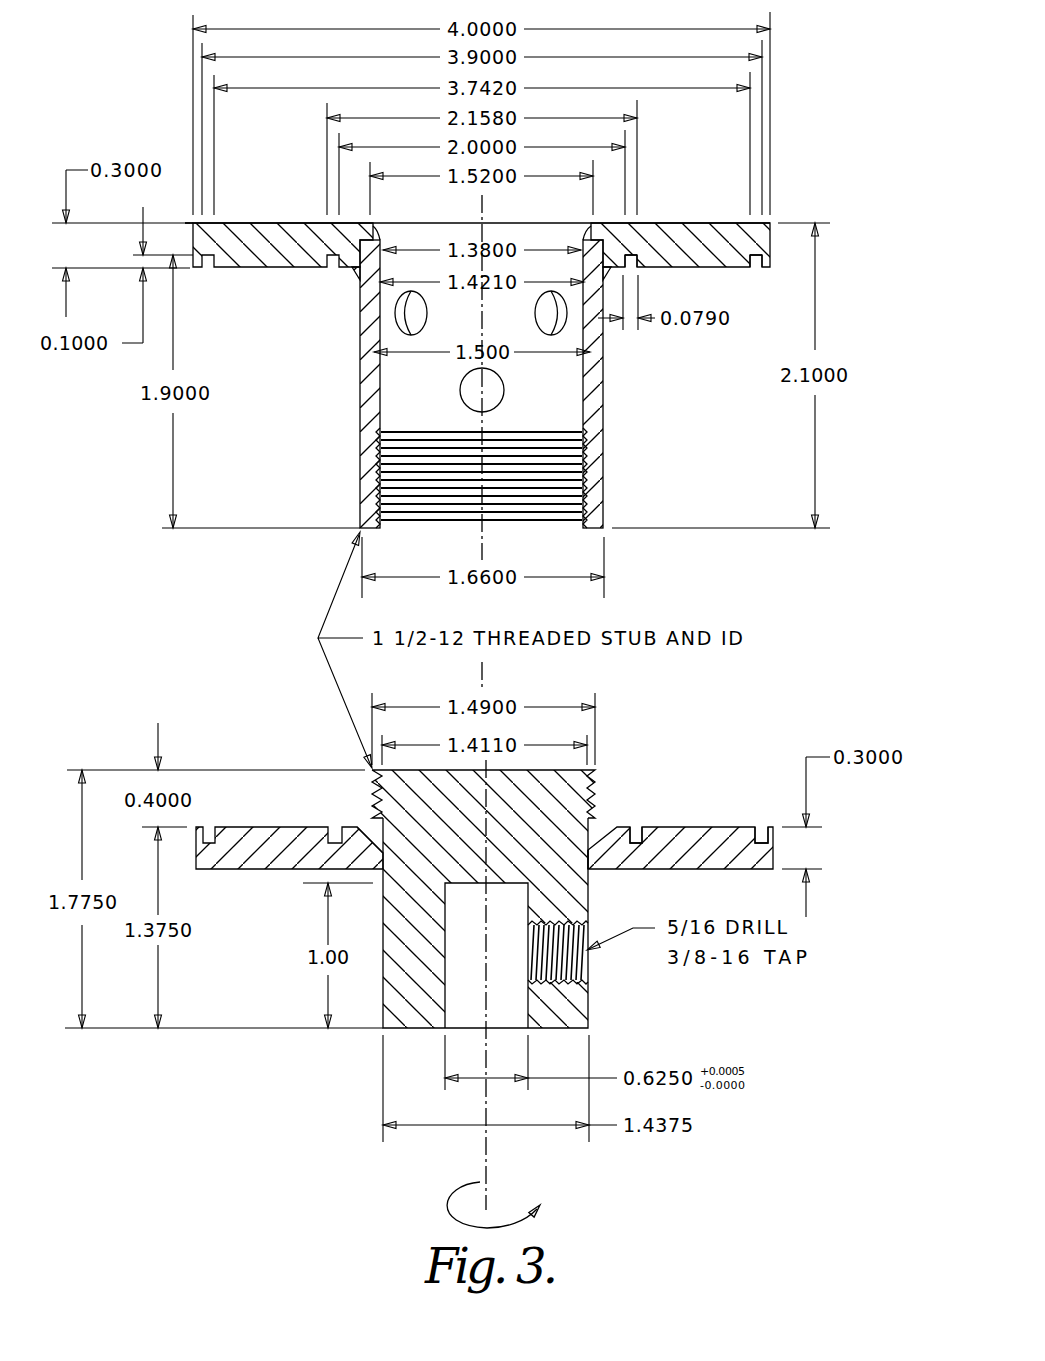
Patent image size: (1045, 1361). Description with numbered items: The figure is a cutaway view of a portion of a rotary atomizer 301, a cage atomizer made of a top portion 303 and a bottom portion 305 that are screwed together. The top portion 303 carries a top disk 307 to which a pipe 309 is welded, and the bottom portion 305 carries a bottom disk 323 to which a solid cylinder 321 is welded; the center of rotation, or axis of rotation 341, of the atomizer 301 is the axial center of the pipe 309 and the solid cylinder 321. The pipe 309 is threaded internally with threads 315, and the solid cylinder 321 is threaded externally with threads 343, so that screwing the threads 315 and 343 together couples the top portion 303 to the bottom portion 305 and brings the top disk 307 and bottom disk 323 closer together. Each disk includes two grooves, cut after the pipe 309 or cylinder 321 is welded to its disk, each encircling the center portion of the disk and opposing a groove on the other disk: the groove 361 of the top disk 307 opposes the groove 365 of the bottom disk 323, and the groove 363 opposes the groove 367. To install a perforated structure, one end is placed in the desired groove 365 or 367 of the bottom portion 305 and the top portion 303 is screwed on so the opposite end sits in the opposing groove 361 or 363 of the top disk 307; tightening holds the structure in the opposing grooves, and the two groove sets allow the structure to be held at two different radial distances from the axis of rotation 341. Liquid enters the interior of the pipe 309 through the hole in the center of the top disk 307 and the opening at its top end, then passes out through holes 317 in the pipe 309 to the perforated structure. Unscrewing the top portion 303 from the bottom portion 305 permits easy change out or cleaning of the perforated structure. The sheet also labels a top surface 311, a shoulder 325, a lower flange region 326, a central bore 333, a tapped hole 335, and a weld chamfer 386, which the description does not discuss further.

The rotary atomizer 301 is at (797, 203).
The top portion 303 is at (553, 427).
The bottom portion 305 is at (561, 967).
The top disk 307 is at (290, 228).
The pipe 309 is at (358, 328).
The top surface 311 is at (500, 222).
The threads 315 is at (594, 430).
The holes 317 is at (566, 320).
The solid cylinder 321 is at (485, 912).
The bottom disk 323 is at (775, 852).
The shoulder 325 is at (600, 880).
The flange 326 is at (255, 823).
The central bore 333 is at (508, 1032).
The tapped hole 335 is at (590, 976).
The axis of rotation 341 is at (486, 1155).
The threads 343 is at (594, 780).
The groove 361 is at (755, 268).
The groove 363 is at (630, 266).
The groove 365 is at (758, 826).
The groove 367 is at (634, 827).
The weld chamfer 386 is at (370, 833).